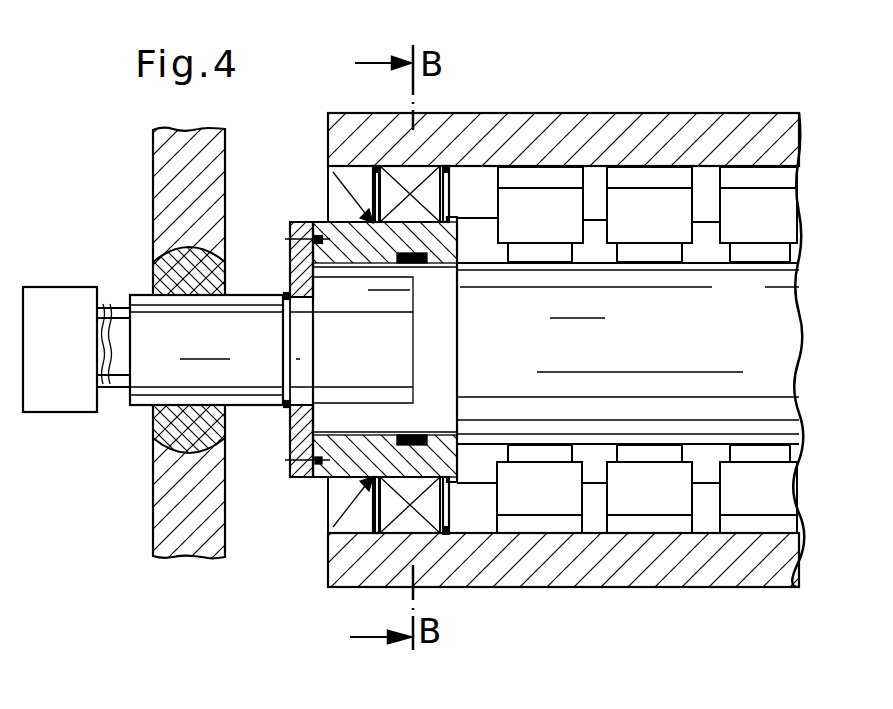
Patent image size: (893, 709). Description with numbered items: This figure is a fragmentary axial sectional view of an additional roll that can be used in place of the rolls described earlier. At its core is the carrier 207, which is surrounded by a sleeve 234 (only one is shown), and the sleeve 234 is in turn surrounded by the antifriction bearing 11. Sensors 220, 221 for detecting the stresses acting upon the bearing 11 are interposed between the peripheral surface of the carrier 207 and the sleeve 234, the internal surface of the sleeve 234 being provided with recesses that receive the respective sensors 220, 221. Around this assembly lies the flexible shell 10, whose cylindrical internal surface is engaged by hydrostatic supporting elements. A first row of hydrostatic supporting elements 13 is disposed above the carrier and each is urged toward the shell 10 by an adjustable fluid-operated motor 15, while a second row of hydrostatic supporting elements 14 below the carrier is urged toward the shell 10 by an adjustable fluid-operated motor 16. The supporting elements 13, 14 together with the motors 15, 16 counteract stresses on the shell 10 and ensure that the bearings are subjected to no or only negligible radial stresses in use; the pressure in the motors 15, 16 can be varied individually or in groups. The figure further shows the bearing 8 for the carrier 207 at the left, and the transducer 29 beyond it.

The bearing 8 is at (205, 268).
The shell 10 is at (698, 130).
The antifriction bearing 11 is at (413, 183).
The hydrostatic supporting element 13 is at (770, 178).
The hydrostatic supporting element 14 is at (777, 528).
The adjustable fluid-operated motor 15 is at (775, 225).
The adjustable fluid-operated motor 16 is at (767, 492).
The transducer 29 is at (67, 300).
The carrier 207 is at (678, 340).
The sensor 220 is at (420, 265).
The sensor 221 is at (420, 435).
The sleeve 234 is at (333, 465).